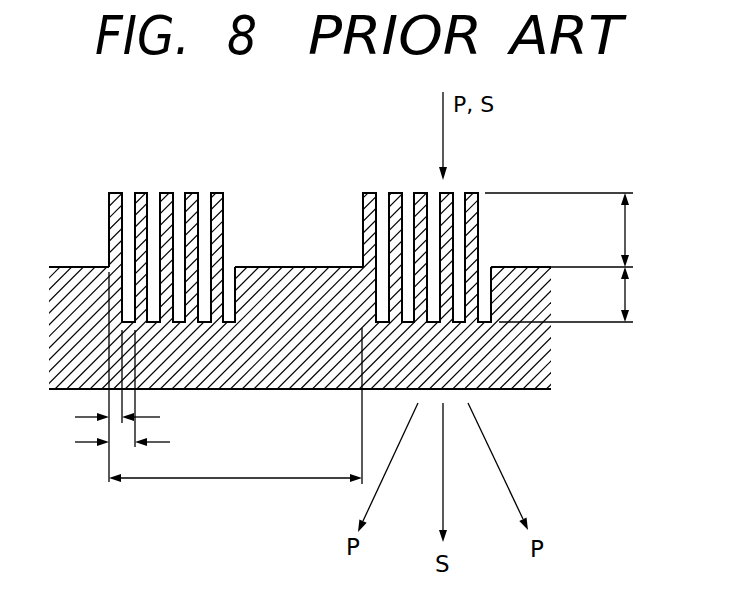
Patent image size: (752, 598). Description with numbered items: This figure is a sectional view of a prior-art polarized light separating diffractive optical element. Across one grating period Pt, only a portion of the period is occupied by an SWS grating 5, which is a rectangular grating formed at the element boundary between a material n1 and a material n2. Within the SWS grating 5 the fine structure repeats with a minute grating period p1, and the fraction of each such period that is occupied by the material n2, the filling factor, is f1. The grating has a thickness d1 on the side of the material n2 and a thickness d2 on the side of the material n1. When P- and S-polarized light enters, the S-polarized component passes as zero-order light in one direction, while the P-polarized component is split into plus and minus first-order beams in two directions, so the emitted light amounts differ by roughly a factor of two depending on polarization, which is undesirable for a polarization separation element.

The SWS grating 5 is at (140, 217).
The material n1 is at (242, 180).
The material n2 is at (537, 352).
The thickness on the side of material n2 d1 is at (580, 294).
The thickness on the side of material n1 d2 is at (573, 230).
The filling factor f1 is at (131, 418).
The grating period of the minute periodic structure p1 is at (138, 445).
The grating period Pt is at (235, 490).